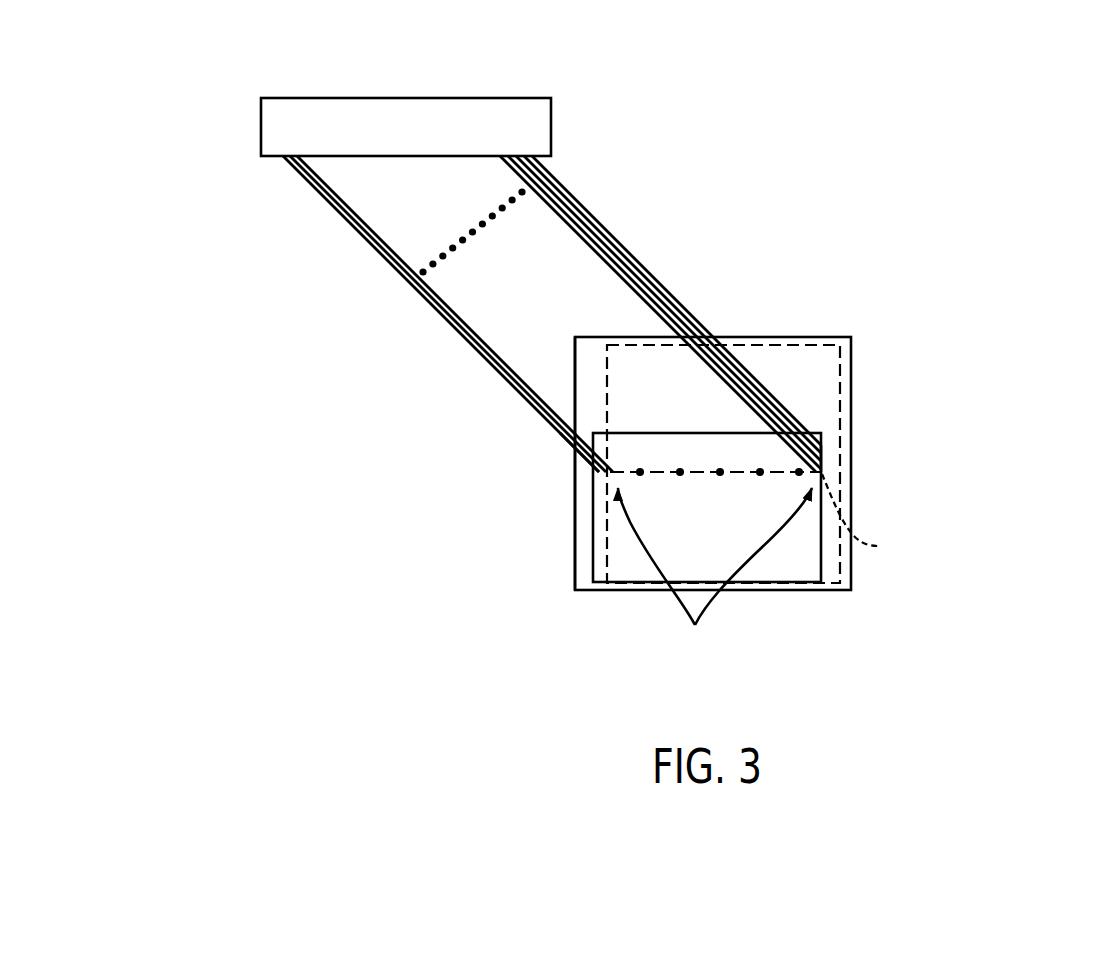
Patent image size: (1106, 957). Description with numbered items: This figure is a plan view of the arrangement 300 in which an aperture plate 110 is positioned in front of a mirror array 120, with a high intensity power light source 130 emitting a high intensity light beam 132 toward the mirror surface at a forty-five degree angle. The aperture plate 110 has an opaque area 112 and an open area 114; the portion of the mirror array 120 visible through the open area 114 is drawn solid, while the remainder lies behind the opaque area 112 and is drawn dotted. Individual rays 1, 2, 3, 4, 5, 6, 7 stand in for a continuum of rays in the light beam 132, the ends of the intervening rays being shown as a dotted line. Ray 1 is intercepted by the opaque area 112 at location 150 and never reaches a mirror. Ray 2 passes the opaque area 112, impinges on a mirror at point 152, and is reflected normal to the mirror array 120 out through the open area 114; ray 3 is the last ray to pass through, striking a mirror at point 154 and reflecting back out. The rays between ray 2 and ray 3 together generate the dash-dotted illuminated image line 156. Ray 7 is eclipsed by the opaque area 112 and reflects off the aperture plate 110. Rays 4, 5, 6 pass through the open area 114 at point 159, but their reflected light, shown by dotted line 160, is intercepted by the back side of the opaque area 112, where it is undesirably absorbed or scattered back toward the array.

The optical system 300 is at (900, 108).
The high intensity power light source 130 is at (429, 98).
The high intensity light beam 132 is at (448, 314).
The ray 1 is at (397, 269).
The ray 2 is at (432, 288).
The ray 3 is at (640, 298).
The ray 4 is at (606, 252).
The ray 5 is at (626, 265).
The ray 6 is at (638, 272).
The ray 7 is at (756, 380).
The aperture plate 110 is at (851, 337).
The opaque area 112 is at (574, 500).
The open area 114 is at (579, 541).
The mirror array 120 is at (821, 344).
The location 150 is at (557, 452).
The point 152 is at (653, 552).
The point 154 is at (751, 558).
The illuminated image line 156 is at (659, 468).
The point 159 is at (836, 454).
The dotted line 160 is at (866, 517).